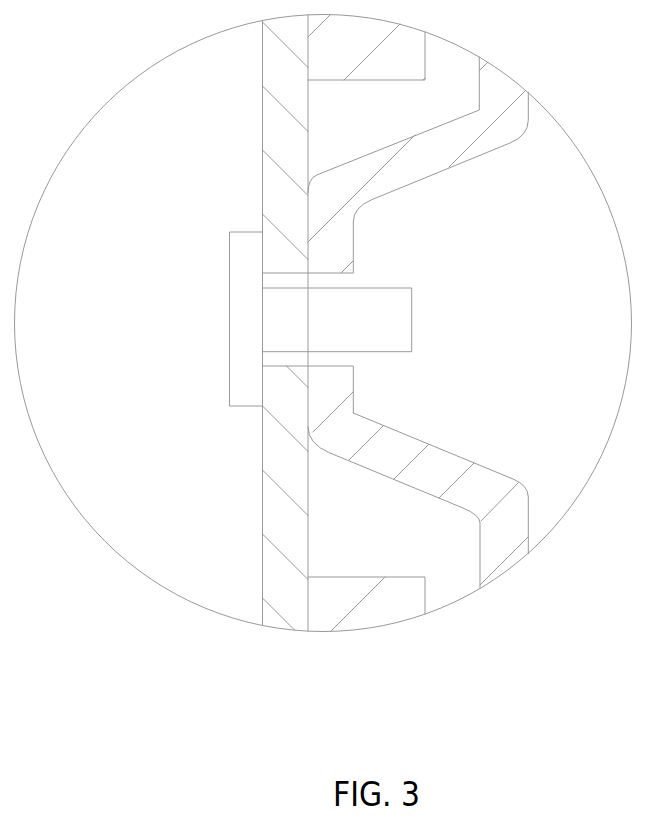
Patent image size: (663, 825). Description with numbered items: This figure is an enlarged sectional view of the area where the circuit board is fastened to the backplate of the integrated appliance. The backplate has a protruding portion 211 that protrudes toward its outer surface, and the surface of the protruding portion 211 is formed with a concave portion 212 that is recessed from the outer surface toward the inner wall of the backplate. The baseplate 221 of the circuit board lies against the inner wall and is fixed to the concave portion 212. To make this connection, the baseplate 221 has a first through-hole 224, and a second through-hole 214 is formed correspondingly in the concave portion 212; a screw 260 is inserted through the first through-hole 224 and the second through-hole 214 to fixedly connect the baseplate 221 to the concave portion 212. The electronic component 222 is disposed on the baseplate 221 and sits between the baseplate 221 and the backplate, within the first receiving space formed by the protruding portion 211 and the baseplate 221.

The protruding portion 211 is at (503, 528).
The concave portion 212 is at (342, 393).
The second through-hole 214 is at (330, 283).
The baseplate 221 is at (293, 520).
The electronic component 222 is at (395, 603).
The first through-hole 224 is at (285, 283).
The screw 260 is at (288, 319).